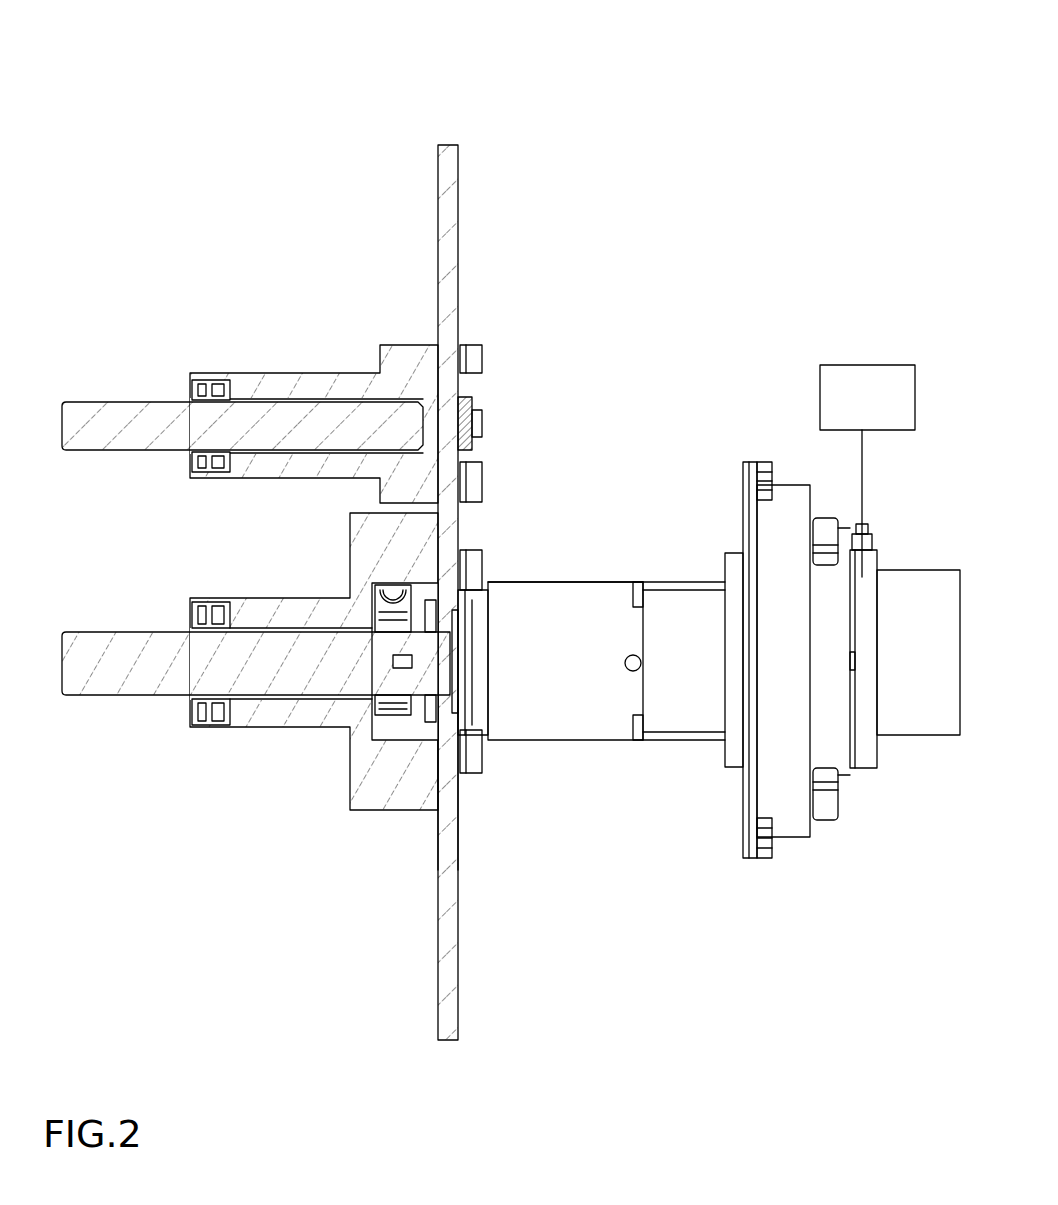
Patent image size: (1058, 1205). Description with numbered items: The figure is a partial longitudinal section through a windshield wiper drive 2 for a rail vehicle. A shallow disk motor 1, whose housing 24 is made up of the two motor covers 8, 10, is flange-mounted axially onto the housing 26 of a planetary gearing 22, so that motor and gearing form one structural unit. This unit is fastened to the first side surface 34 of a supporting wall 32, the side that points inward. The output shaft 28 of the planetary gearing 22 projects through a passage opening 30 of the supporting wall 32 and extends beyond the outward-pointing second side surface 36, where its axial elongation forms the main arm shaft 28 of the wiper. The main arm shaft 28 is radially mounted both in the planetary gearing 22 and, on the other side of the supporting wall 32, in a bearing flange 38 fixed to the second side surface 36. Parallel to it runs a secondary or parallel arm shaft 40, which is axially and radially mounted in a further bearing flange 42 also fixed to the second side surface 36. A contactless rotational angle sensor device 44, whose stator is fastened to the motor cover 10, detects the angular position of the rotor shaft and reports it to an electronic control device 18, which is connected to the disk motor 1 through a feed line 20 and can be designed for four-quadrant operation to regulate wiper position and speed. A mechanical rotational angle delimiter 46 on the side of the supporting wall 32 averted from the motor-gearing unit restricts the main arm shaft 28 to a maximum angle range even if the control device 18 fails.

The disk motor 1 is at (827, 668).
The windshield wiper drive 2 is at (603, 118).
The motor cover 8 is at (775, 798).
The motor cover 10 is at (838, 765).
The electronic control device 18 is at (882, 413).
The feed line 20 is at (866, 490).
The planetary gearing 22 is at (555, 722).
The housing 24 is at (795, 490).
The housing 26 is at (540, 593).
The output shaft / main arm shaft 28 is at (167, 682).
The passage opening 30 is at (430, 708).
The supporting wall 32 is at (450, 995).
The first side surface 34 is at (460, 878).
The second side surface 36 is at (437, 878).
The bearing flange 38 is at (267, 715).
The secondary or parallel arm shaft 40 is at (133, 410).
The further bearing flange 42 is at (288, 385).
The rotational angle sensor device 44 is at (915, 580).
The mechanical rotational angle delimiter 46 is at (402, 577).